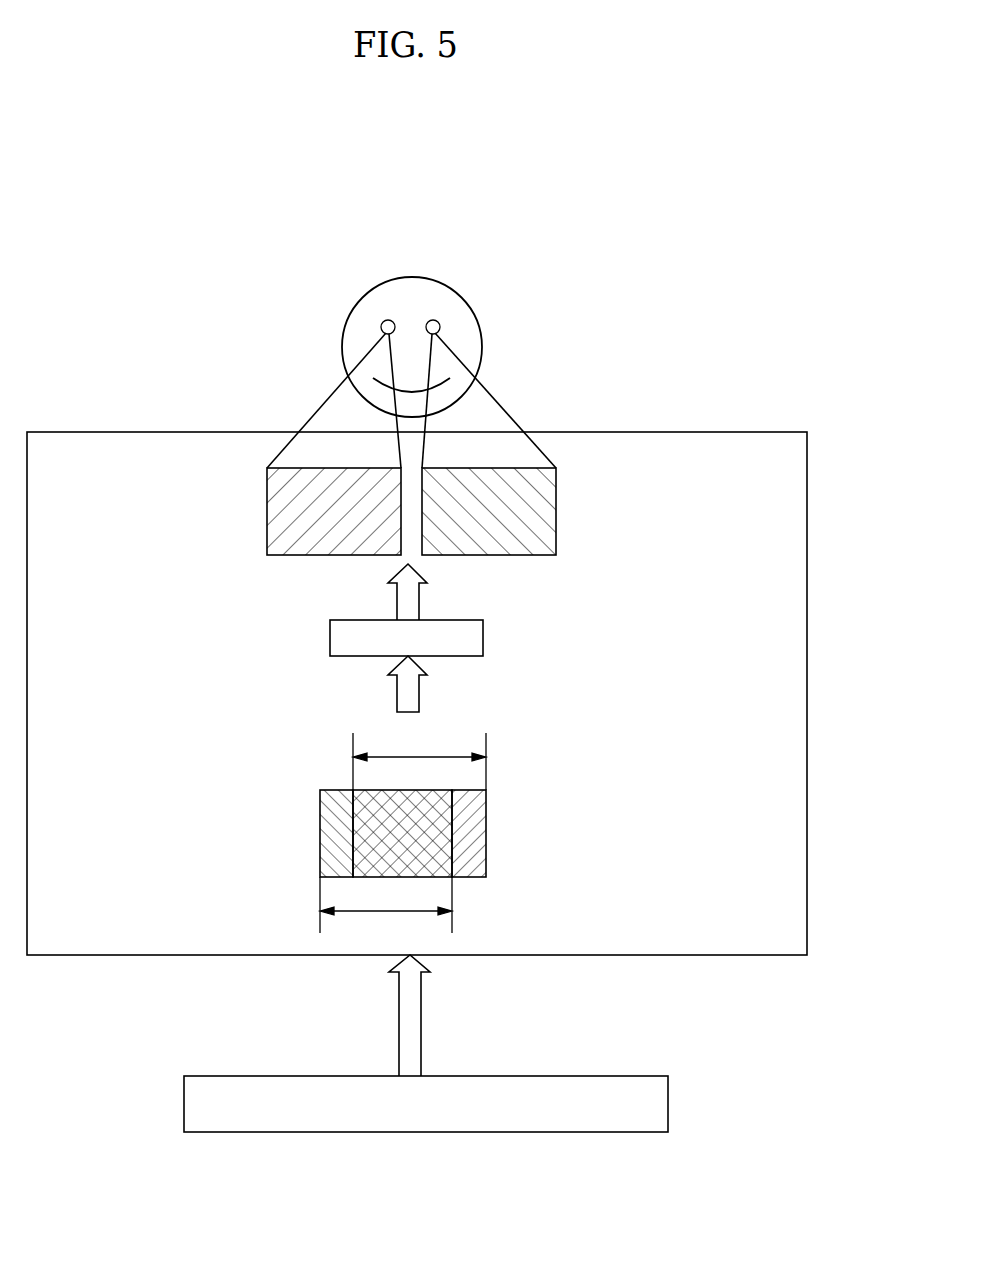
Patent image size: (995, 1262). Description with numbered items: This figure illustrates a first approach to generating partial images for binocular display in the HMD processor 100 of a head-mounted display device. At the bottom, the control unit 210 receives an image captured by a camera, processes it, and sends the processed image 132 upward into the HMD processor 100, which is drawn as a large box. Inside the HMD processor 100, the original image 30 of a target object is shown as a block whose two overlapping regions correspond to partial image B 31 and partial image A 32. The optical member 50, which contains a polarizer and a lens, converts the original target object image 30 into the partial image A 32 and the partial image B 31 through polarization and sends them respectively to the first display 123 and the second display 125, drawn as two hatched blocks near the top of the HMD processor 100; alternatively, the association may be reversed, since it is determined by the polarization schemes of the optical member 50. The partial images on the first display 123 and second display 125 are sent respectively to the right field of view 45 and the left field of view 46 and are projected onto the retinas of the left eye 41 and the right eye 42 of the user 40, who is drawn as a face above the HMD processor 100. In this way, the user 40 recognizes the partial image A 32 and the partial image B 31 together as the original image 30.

The target object image 30 is at (453, 835).
The partial image B 31 is at (386, 909).
The partial image A 32 is at (419, 760).
The user 40 is at (410, 310).
The left eye 41 is at (440, 327).
The right eye 42 is at (381, 327).
The right field of view 45 is at (329, 396).
The left field of view 46 is at (492, 396).
The optical member 50 is at (483, 650).
The HMD processor 100 is at (683, 432).
The first display 123 is at (265, 505).
The second display 125 is at (556, 508).
The processed image 132 is at (421, 1000).
The control unit 210 is at (668, 1100).